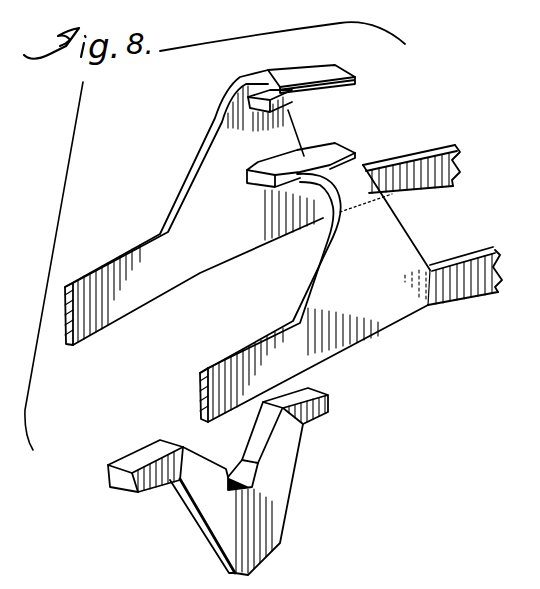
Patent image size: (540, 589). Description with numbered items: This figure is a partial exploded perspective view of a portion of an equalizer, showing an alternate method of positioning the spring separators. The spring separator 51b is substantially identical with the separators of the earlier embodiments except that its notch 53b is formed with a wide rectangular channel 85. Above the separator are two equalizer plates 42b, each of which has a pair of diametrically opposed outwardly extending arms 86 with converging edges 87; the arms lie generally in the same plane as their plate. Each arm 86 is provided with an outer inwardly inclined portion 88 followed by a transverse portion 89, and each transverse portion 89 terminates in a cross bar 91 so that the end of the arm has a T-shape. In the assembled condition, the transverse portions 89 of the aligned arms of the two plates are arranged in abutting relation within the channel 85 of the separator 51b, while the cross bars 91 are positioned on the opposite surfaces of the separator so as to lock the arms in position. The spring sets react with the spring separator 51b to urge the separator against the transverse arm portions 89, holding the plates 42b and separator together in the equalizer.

The equalizer plate 42b is at (120, 298).
The spring separator 51b is at (217, 510).
The notch 53b is at (197, 452).
The channel 85 is at (280, 503).
The arm 86 is at (204, 173).
The converging edge 87 is at (187, 173).
The inwardly inclined portion 88 is at (238, 80).
The transverse portion 89 is at (281, 75).
The cross bar 91 is at (334, 86).